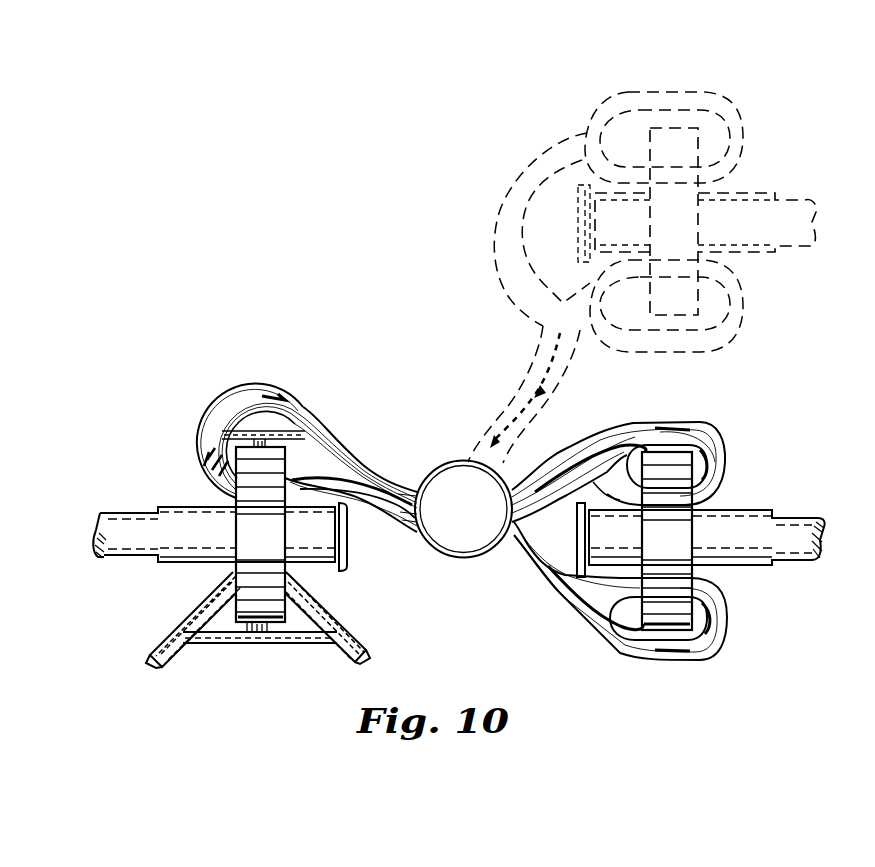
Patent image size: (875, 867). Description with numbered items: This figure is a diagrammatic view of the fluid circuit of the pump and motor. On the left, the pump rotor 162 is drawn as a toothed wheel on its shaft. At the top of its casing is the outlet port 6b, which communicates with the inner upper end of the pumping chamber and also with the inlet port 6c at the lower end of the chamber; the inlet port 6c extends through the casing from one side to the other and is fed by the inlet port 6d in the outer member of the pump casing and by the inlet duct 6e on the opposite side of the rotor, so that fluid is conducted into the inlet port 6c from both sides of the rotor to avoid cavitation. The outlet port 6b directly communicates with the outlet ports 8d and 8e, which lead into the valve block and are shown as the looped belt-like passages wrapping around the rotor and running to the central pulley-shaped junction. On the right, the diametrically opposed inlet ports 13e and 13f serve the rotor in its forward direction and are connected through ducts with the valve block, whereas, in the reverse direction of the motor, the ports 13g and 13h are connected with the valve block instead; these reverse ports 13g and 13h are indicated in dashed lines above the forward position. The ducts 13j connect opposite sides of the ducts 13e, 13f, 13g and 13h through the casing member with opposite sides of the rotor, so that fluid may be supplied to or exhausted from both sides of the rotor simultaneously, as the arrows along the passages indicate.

The gear 162 is at (260, 534).
The outlet port 6b is at (262, 440).
The inlet port 6c is at (259, 643).
The inlet port 6d is at (182, 628).
The inlet duct 6e is at (340, 628).
The outlet port 8d is at (213, 460).
The outlet port 8e is at (323, 440).
The inlet port 13e is at (725, 468).
The inlet port 13f is at (727, 602).
The port 13g is at (745, 128).
The port 13h is at (743, 302).
The ducts 13j is at (690, 77).